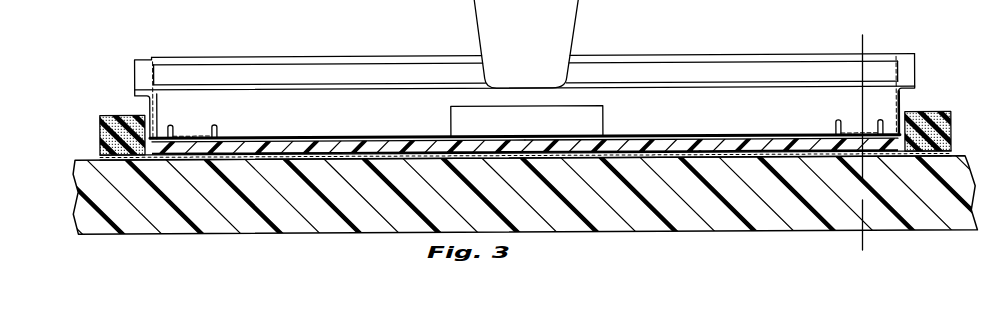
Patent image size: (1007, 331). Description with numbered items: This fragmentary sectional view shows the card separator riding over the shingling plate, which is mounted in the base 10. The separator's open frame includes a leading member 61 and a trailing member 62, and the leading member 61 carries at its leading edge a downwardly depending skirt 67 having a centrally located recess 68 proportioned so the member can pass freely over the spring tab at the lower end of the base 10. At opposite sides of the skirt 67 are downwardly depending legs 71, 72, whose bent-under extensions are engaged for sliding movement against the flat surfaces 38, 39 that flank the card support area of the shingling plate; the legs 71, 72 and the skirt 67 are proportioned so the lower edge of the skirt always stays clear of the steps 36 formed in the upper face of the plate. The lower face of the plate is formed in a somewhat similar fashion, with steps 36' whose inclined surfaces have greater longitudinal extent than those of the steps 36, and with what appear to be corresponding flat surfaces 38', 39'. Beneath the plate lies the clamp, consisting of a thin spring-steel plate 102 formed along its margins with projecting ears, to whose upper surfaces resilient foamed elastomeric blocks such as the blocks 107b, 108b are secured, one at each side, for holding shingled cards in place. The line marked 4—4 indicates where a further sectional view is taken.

The base 10 is at (966, 155).
The plate 102 is at (100, 158).
The resilient block 108b is at (106, 114).
The resilient block 107b is at (932, 111).
The leg 72 is at (185, 137).
The leg 71 is at (852, 132).
The flat surface 39 is at (246, 130).
The hatched layer right portion 39' is at (799, 125).
The layer top surface left 38' is at (338, 122).
The flat surface 38 is at (711, 122).
The steps 36' is at (424, 135).
The steps 36 is at (600, 134).
The recess 68 is at (590, 115).
The skirt 67 is at (719, 123).
The leading member 61 is at (683, 85).
The trailing member 62 is at (623, 62).
The section line 4- 4 is at (866, 244).